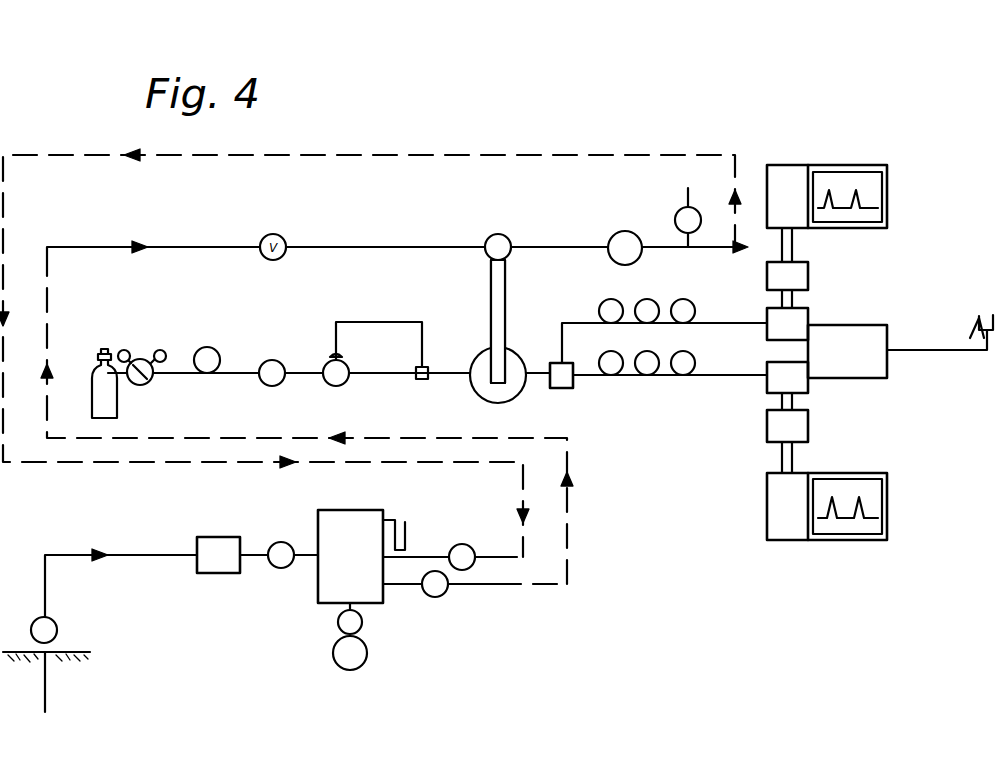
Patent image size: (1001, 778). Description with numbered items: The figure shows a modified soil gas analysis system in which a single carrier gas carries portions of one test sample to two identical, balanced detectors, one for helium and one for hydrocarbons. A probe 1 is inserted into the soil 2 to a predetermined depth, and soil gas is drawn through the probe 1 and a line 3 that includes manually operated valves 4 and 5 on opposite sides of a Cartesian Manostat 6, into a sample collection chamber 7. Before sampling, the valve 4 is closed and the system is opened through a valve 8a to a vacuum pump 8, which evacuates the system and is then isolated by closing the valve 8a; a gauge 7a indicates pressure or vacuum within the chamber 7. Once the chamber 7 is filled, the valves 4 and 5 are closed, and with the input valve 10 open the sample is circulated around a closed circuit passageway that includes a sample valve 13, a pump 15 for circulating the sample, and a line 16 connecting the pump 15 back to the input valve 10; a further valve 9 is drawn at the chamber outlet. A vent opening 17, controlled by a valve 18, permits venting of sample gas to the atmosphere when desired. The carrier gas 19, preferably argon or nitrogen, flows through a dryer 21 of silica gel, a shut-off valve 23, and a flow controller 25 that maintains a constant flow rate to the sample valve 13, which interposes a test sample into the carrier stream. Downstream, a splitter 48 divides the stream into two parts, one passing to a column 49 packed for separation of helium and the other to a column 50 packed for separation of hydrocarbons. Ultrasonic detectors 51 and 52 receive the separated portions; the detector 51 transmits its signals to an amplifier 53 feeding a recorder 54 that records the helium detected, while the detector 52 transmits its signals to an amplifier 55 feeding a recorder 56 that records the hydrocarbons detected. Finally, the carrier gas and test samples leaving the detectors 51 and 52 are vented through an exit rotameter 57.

The probe 1 is at (45, 695).
The soil 2 is at (72, 650).
The line 3 is at (65, 554).
The manually operated valve 4 is at (57, 628).
The manually operated valve 5 is at (280, 542).
The Cartesian Manostat 6 is at (212, 537).
The sample collection chamber 7 is at (358, 539).
The gauge 7a is at (407, 536).
The vacuum pump 8 is at (368, 660).
The valve 8a is at (362, 622).
The valve 9 is at (446, 594).
The input valve 10 is at (470, 546).
The sample valve 13 is at (511, 253).
The pump 15 is at (612, 236).
The line 16 is at (357, 152).
The vent opening 17 is at (688, 190).
The valve 18 is at (674, 218).
The carrier gas 19 is at (112, 397).
The dryer 21 is at (208, 347).
The shut-off valve 23 is at (276, 360).
The flow controller 25 is at (378, 322).
The splitter 48 is at (556, 363).
The column 49 is at (660, 298).
The column 50 is at (660, 358).
The detector 51 is at (808, 332).
The detector 52 is at (808, 370).
The amplifier 53 is at (808, 275).
The recorder 54 is at (875, 190).
The amplifier 55 is at (808, 420).
The recorder 56 is at (875, 500).
The exit rotameter 57 is at (940, 332).